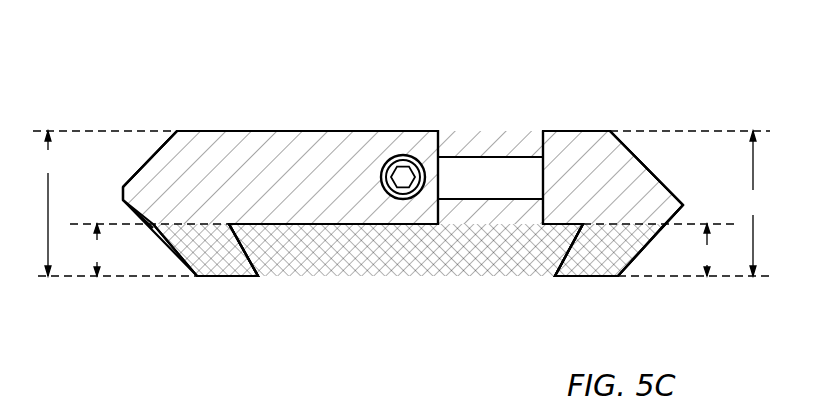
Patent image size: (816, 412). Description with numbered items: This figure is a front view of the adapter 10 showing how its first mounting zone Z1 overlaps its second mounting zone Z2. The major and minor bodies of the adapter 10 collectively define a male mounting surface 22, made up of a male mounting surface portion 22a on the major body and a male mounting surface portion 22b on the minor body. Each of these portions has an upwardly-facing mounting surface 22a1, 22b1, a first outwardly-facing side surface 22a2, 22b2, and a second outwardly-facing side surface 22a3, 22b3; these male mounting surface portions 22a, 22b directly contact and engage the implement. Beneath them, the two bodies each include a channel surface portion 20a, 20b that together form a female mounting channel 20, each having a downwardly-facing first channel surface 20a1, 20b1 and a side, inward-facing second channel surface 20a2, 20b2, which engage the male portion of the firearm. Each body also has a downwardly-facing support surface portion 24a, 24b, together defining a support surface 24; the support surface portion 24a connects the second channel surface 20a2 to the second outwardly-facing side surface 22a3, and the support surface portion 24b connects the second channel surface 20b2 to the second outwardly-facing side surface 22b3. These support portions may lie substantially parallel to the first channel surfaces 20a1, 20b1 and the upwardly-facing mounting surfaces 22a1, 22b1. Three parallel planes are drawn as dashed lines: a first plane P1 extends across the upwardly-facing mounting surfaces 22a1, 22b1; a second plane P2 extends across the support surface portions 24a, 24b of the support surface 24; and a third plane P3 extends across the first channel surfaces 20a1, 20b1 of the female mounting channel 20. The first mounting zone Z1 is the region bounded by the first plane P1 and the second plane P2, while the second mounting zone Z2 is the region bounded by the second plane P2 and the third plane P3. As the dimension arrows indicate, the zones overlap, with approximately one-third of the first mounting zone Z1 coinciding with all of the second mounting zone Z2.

The adapter 10 is at (106, 76).
The male mounting surface 22 is at (466, 116).
The male mounting surface portion 22a is at (280, 150).
The male mounting surface portion 22b is at (547, 150).
The upwardly-facing mounting surface 22a1 is at (290, 130).
The first outwardly-facing side surface 22a2 is at (143, 160).
The second outwardly-facing side surface 22a3 is at (130, 218).
The upwardly-facing mounting surface 22b1 is at (566, 131).
The first outwardly-facing side surface 22b2 is at (652, 167).
The second outwardly-facing side surface 22b3 is at (683, 221).
The female mounting channel 20 is at (361, 283).
The channel surface portion 20a is at (278, 265).
The channel surface portion 20b is at (538, 265).
The first channel surface 20a1 is at (243, 225).
The second channel surface 20a2 is at (257, 262).
The first channel surface 20b1 is at (552, 224).
The second channel surface 20b2 is at (558, 258).
The support surface 24 is at (373, 365).
The downwardly-facing support surface portion 24a is at (220, 278).
The downwardly-facing support surface portion 24b is at (590, 278).
The first plane P1 is at (102, 131).
The second plane P2 is at (108, 277).
The third plane P3 is at (93, 223).
The first mounting zone Z1 is at (400, 203).
The second mounting zone Z2 is at (404, 250).